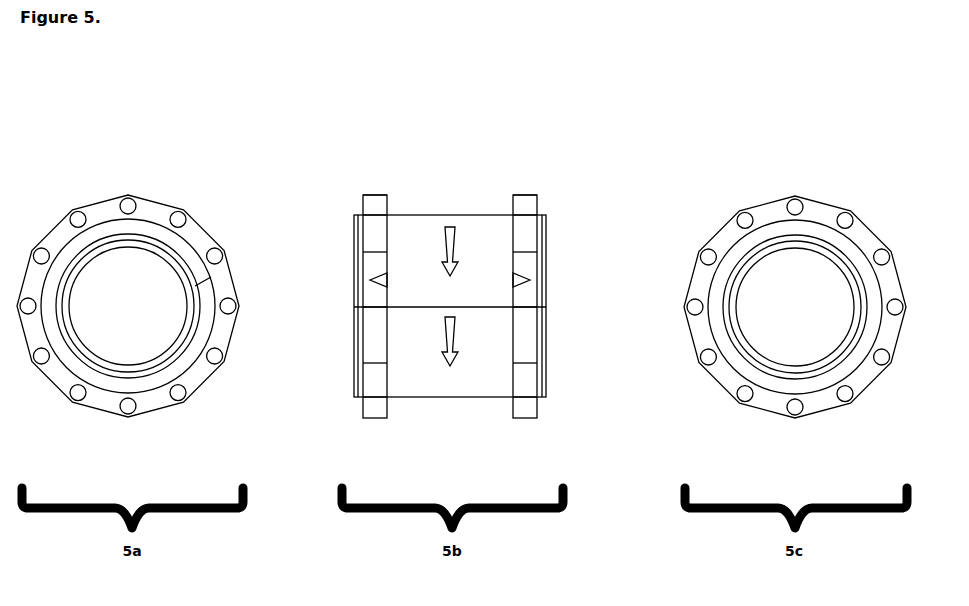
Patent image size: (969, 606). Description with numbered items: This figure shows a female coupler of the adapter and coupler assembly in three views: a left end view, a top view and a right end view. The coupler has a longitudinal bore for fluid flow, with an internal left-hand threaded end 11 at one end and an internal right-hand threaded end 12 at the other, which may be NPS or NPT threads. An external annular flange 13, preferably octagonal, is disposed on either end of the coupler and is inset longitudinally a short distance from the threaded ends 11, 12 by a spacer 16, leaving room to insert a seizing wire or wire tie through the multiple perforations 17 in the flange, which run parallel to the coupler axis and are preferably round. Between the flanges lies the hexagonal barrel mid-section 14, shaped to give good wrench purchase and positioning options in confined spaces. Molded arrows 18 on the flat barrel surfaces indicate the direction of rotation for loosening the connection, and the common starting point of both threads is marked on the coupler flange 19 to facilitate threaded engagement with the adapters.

In FIG. 5B, the internal left-hand threaded end 11 is at (546, 238).
In FIG. 5C, the internal left-hand threaded end 11 is at (723, 323).
In FIG. 5A, the internal right-hand threaded end 12 is at (197, 330).
In FIG. 5B, the internal right-hand threaded end 12 is at (354, 238).
In FIG. 5A, the external annular flange 13 is at (186, 216).
In FIG. 5B, the external annular flange 13 is at (375, 195).
In FIG. 5C, the external annular flange 13 is at (737, 222).
In FIG. 5B, the hexagonal barrel mid-section 14 is at (447, 222).
In FIG. 5A, the spacer 16 is at (190, 382).
In FIG. 5B, the spacer 16 is at (362, 217).
In FIG. 5C, the spacer 16 is at (735, 380).
In FIG. 5A, the perforations 17 is at (143, 413).
In FIG. 5B, the perforations 17 is at (387, 405).
In FIG. 5C, the perforations 17 is at (788, 413).
In FIG. 5B, the molded arrows 18 is at (438, 215).
In FIG. 5B, the coupler flange mark 19 is at (372, 285).